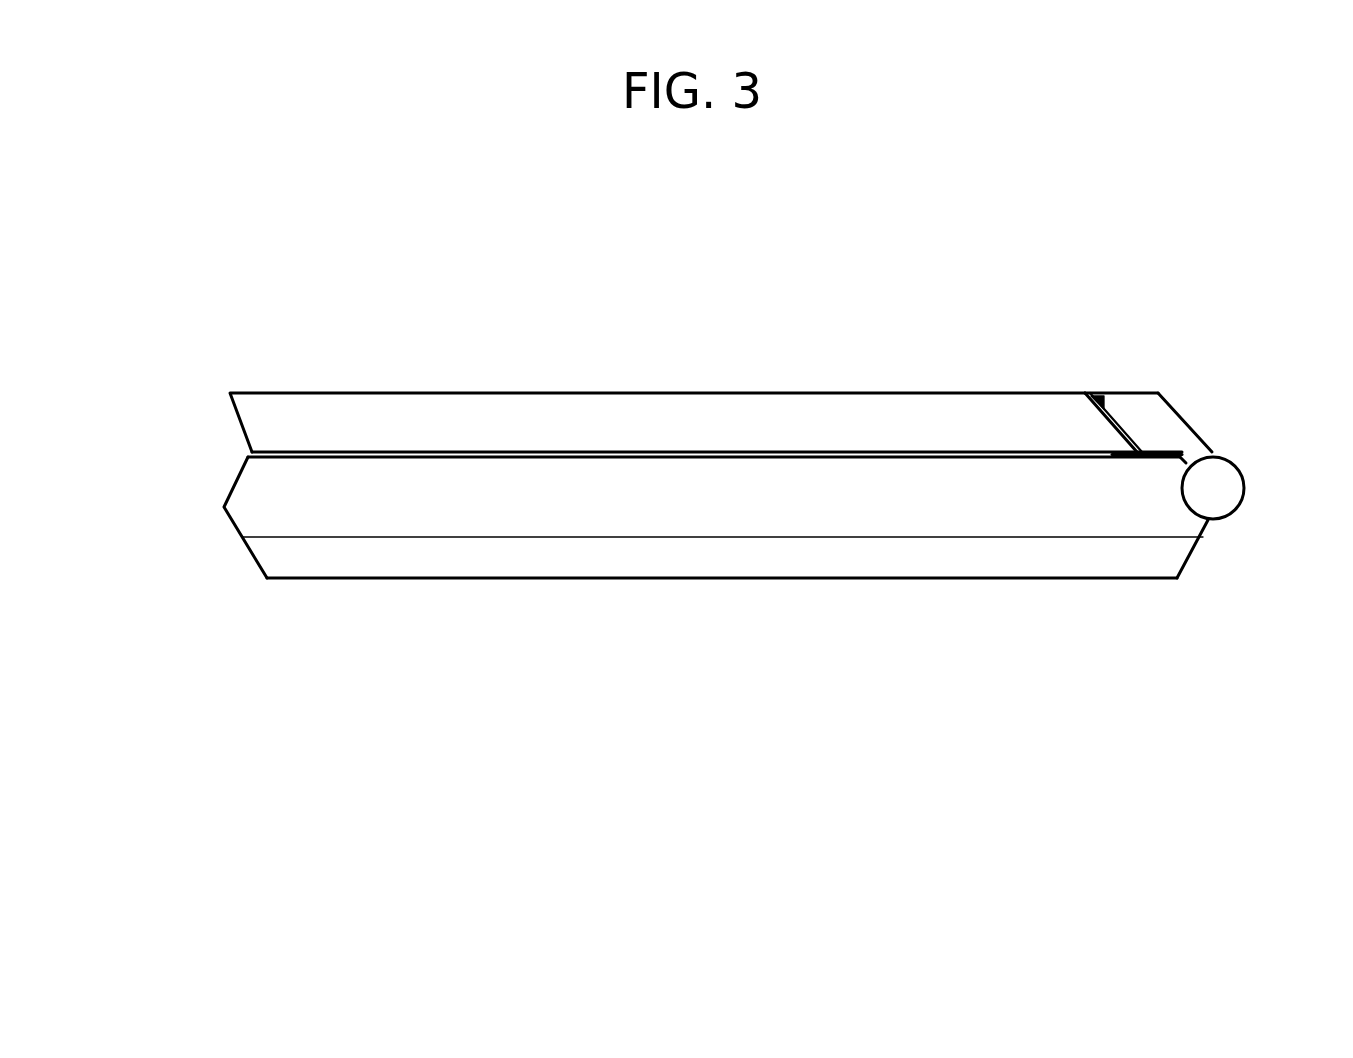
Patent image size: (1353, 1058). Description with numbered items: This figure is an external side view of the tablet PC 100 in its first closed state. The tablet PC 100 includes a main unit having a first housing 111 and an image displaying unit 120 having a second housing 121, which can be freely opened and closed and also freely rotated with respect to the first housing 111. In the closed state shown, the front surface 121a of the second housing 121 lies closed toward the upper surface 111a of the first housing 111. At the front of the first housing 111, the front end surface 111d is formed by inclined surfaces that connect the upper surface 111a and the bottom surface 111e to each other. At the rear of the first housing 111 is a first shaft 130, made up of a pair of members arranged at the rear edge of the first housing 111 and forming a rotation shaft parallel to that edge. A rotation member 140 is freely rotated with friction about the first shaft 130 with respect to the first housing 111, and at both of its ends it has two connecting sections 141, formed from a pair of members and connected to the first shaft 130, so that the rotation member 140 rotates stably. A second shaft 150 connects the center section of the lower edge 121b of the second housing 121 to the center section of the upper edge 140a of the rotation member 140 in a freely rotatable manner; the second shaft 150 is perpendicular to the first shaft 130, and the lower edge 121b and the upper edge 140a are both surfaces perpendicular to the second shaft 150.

The tablet PC 100 is at (688, 489).
The first housing 111 is at (629, 569).
The upper surface 111a is at (1003, 448).
The front end surface 111d is at (226, 475).
The bottom surface 111e is at (703, 586).
The image displaying unit 120 is at (724, 476).
The second housing 121 is at (724, 481).
The front surface 121a is at (729, 462).
The lower edge 121b is at (1130, 435).
The first shaft 130 is at (1208, 499).
The rotation member 140 is at (1131, 370).
The upper edge 140a is at (1099, 427).
The connecting sections 141 is at (1192, 451).
The second shaft 150 is at (1140, 416).